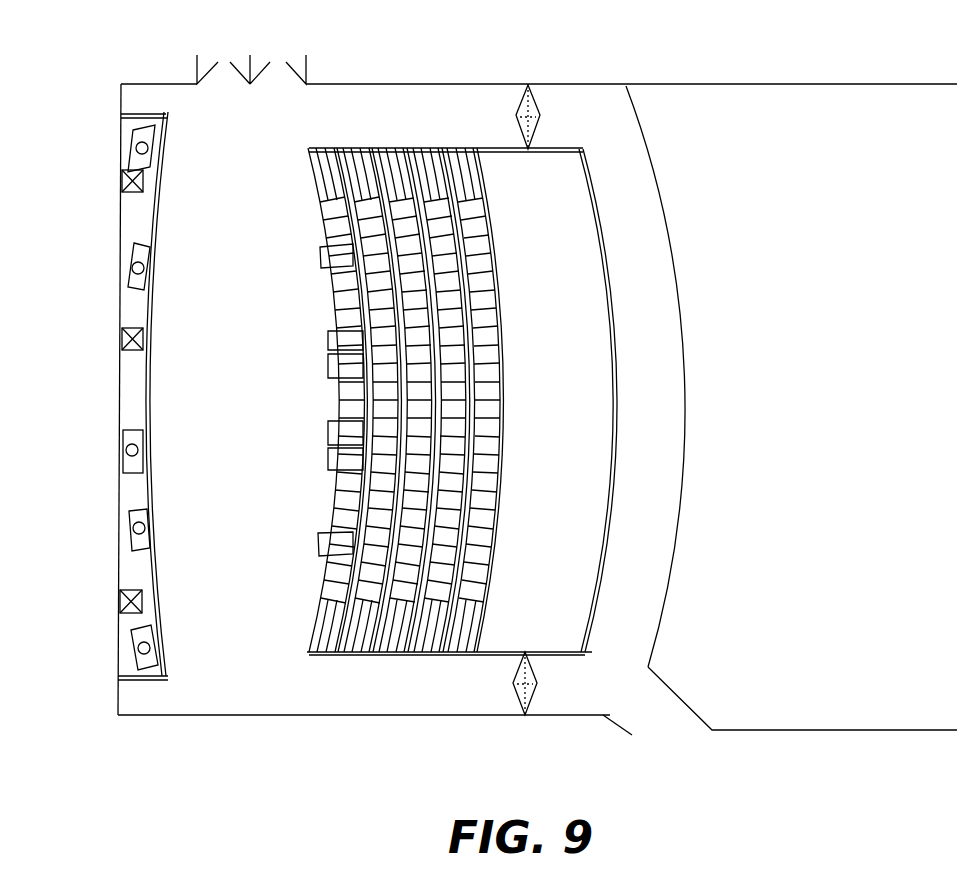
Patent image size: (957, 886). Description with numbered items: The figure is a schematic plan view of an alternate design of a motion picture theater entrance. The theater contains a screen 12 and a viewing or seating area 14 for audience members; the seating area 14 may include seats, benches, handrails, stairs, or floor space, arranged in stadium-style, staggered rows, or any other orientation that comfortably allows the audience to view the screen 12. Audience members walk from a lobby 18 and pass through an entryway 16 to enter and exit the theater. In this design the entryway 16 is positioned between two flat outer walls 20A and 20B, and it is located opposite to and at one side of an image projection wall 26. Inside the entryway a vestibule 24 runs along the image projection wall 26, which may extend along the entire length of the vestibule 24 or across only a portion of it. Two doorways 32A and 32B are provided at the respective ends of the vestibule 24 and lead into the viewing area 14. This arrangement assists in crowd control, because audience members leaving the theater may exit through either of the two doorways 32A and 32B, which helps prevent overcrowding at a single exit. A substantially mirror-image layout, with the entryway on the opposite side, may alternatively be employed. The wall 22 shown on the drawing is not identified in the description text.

The screen 12 is at (150, 430).
The viewing or seating area 14 is at (310, 328).
The entryway 16 is at (647, 707).
The lobby 18 is at (708, 809).
The flat outer wall 20A is at (596, 716).
The flat outer wall 20B is at (750, 732).
The curved outer wall 22 is at (670, 243).
The vestibule 24 is at (662, 420).
The image projection wall 26 is at (606, 548).
The doorway 32A is at (520, 714).
The doorway 32B is at (540, 97).